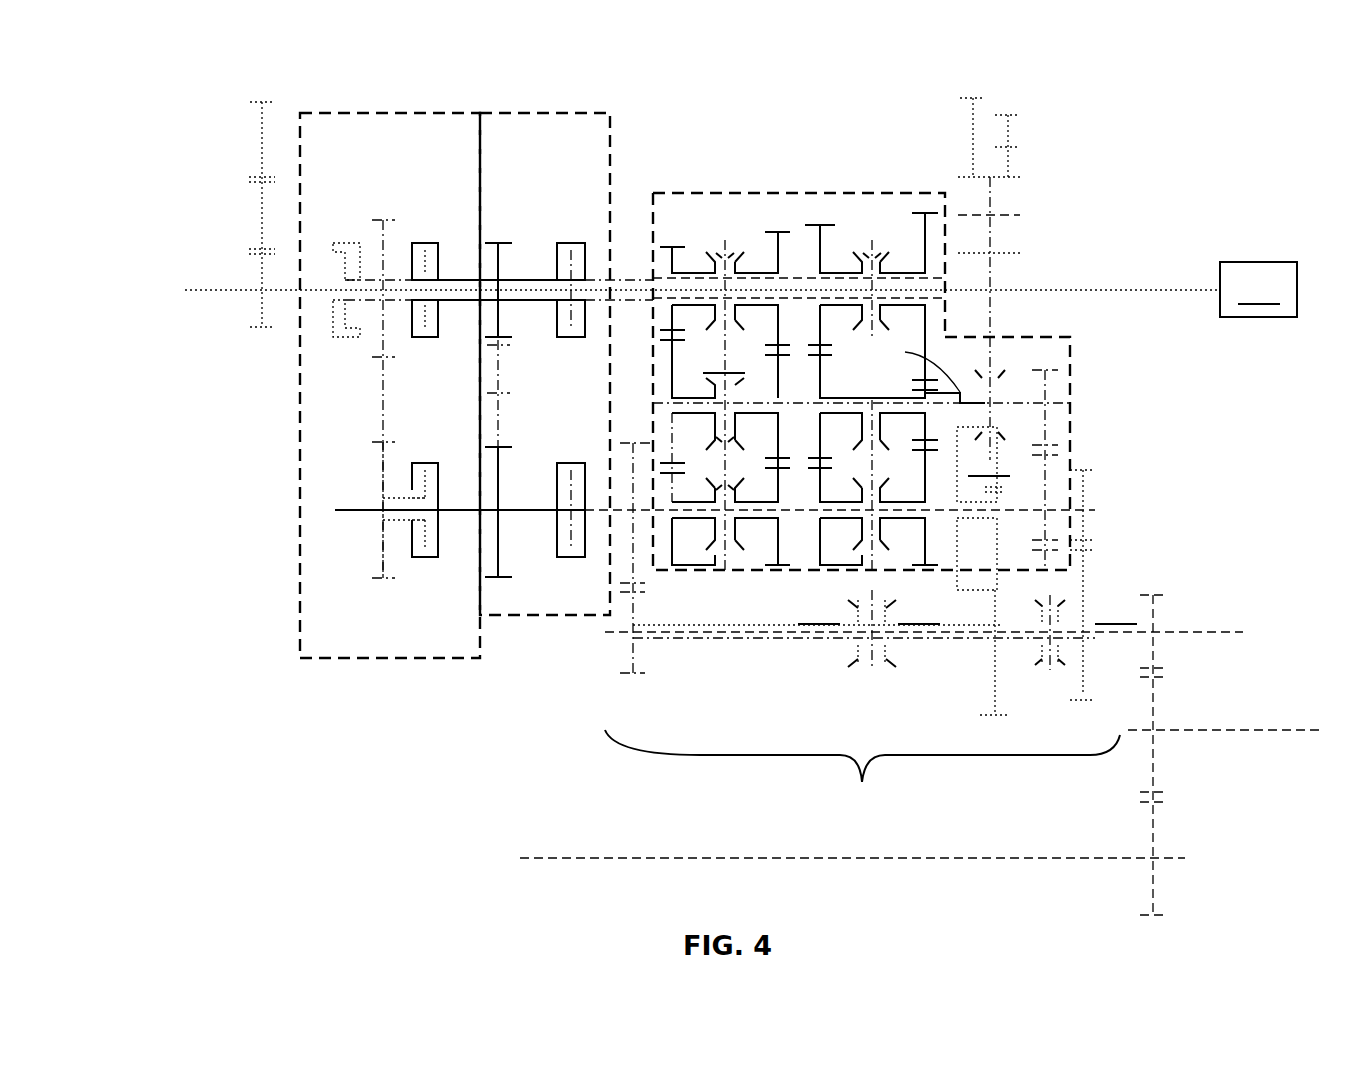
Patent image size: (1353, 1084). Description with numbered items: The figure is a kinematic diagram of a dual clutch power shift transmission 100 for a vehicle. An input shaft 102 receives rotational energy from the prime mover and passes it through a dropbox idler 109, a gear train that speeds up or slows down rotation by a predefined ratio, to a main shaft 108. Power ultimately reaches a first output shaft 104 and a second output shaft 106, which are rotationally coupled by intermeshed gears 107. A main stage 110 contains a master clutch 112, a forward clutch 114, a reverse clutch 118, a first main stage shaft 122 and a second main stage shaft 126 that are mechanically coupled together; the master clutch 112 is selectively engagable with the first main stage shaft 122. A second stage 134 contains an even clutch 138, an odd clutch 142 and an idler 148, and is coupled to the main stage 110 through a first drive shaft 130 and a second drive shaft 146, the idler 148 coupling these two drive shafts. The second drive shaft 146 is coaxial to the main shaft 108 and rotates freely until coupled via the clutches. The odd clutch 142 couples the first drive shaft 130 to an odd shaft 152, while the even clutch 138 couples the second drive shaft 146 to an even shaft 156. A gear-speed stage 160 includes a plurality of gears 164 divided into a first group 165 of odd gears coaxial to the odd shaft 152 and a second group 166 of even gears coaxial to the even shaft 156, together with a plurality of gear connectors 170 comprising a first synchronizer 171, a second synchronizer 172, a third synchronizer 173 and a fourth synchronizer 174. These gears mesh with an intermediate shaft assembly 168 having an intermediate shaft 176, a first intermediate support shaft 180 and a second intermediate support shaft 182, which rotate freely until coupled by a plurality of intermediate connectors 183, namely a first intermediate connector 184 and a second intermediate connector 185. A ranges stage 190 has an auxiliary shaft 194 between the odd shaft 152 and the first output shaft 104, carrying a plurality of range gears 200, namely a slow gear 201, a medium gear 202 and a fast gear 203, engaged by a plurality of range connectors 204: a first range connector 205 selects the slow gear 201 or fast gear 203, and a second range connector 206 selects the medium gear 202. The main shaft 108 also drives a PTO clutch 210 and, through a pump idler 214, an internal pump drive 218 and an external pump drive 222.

The transmission 100 is at (155, 72).
The input shaft 102 is at (243, 140).
The first output shaft 104 is at (1242, 732).
The second output shaft 106 is at (520, 860).
The intermeshed gears 107 is at (1165, 798).
The main shaft 108 is at (200, 291).
The dropbox idler 109 is at (252, 213).
The main stage 110 is at (383, 108).
The master clutch 112 is at (340, 243).
The forward clutch 114 is at (425, 243).
The reverse clutch 118 is at (430, 557).
The first main stage shaft 122 is at (375, 220).
The second main stage shaft 126 is at (375, 578).
The first drive shaft 130 is at (360, 508).
The second stage 134 is at (543, 108).
The even clutch 138 is at (567, 243).
The odd clutch 142 is at (570, 557).
The second drive shaft 146 is at (535, 278).
The idler 148 is at (510, 395).
The odd shaft 152 is at (1100, 512).
The even shaft 156 is at (632, 270).
The gear-speed stage 160 is at (690, 193).
The plurality of gears 164 is at (792, 210).
The first group 165 is at (742, 560).
The second group 166 is at (830, 225).
The intermediate shaft assembly 168 is at (1025, 400).
The plurality of gear connectors 170 is at (890, 225).
The first synchronizer 171 is at (722, 478).
The second synchronizer 172 is at (730, 247).
The third synchronizer 173 is at (872, 478).
The fourth synchronizer 174 is at (868, 240).
The intermediate shaft 176 is at (1065, 405).
The first intermediate support shaft 180 is at (672, 385).
The second intermediate support shaft 182 is at (884, 349).
The plurality of intermediate connectors 183 is at (995, 360).
The first intermediate connector 184 is at (725, 350).
The second intermediate connector 185 is at (983, 571).
The ranges stage 190 is at (862, 778).
The auxiliary shaft 194 is at (1232, 633).
The plurality of range gears 200 is at (730, 650).
The slow gear 201 is at (919, 609).
The medium gear 202 is at (1116, 609).
The fast gear 203 is at (819, 609).
The plurality of range connectors 204 is at (855, 698).
The first range connector 205 is at (870, 672).
The second range connector 206 is at (1052, 672).
The PTO clutch 210 is at (1258, 289).
The pump idler 214 is at (1020, 253).
The internal pump drive 218 is at (1025, 147).
The external pump drive 222 is at (960, 135).